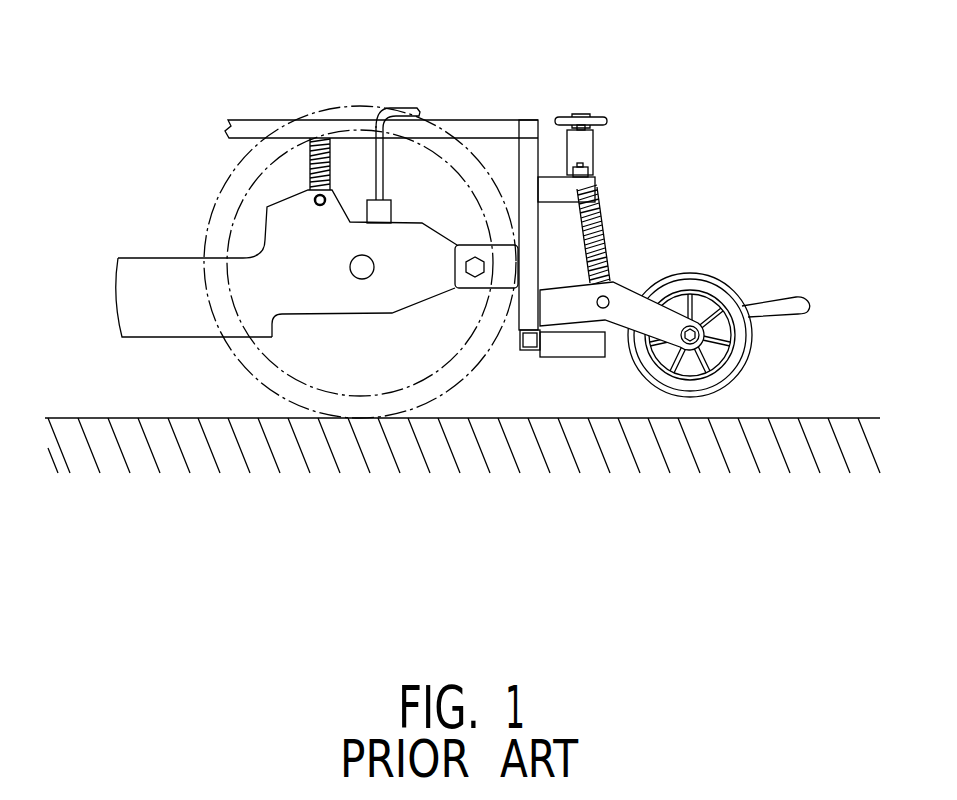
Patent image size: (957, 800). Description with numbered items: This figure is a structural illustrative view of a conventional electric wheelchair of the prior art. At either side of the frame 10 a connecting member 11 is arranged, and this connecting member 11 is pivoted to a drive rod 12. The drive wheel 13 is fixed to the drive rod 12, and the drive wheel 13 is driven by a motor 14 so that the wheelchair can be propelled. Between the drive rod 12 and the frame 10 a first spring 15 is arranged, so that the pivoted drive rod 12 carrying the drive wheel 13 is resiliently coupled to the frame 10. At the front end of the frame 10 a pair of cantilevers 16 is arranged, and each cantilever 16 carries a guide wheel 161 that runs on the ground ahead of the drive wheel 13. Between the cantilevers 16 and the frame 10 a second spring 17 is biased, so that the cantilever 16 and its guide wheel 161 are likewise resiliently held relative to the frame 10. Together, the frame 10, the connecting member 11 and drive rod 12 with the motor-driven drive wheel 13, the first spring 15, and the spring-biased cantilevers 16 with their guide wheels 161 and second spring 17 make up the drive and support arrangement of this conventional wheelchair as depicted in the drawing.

The frame 10 is at (503, 110).
The connecting member 11 is at (478, 284).
The drive rod 12 is at (377, 295).
The drive wheel 13 is at (250, 352).
The motor 14 is at (143, 277).
The first spring 15 is at (310, 160).
The cantilever 16 is at (633, 281).
The guide wheel 161 is at (725, 297).
The second spring 17 is at (602, 215).